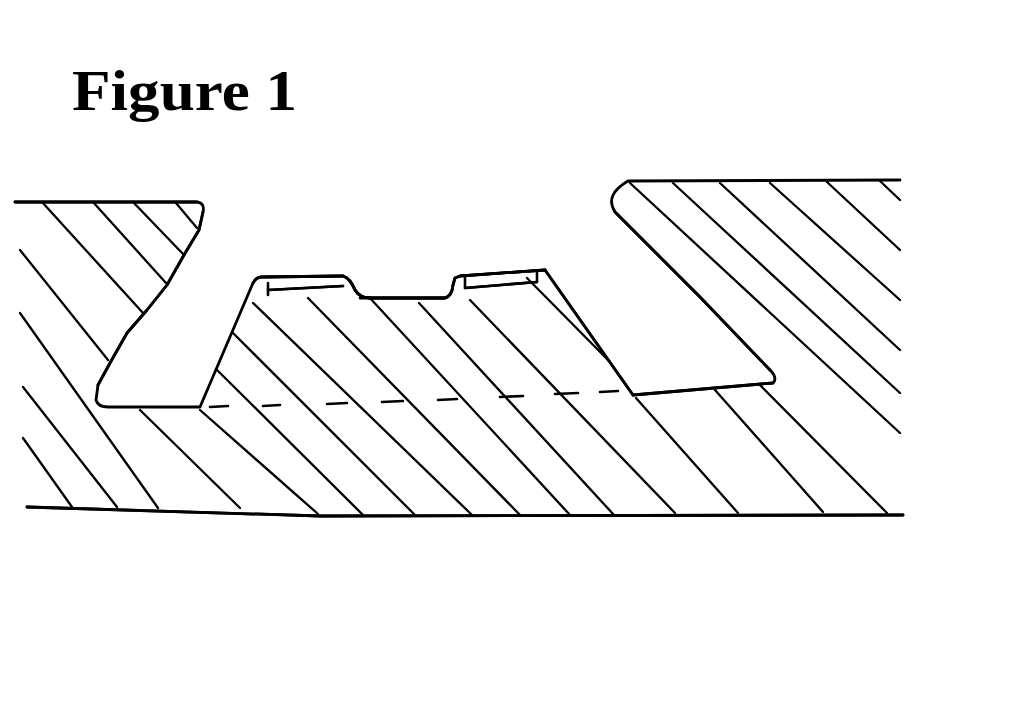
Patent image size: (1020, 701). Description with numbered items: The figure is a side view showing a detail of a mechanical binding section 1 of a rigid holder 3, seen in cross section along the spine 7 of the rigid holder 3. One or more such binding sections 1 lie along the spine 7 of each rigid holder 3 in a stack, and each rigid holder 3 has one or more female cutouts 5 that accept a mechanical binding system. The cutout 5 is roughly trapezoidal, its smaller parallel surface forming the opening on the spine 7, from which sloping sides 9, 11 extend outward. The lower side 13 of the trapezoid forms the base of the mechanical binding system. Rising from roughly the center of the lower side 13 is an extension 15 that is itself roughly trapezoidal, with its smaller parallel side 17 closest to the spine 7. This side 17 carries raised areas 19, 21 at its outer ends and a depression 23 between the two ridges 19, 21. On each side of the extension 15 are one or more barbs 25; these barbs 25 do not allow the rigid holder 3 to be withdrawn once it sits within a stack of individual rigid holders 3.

The mechanical binding section 1 is at (218, 572).
The rigid holder 3 is at (778, 515).
The female cutout 5 is at (545, 221).
The spine 7 is at (77, 202).
The sloping side 9 is at (152, 310).
The sloping side 11 is at (705, 298).
The lower side 13 is at (650, 390).
The extension 15 is at (575, 340).
The smaller parallel side 17 is at (362, 274).
The raised area 19 is at (295, 270).
The raised area 21 is at (478, 275).
The depression 23 is at (402, 297).
The barb 25 is at (530, 272).